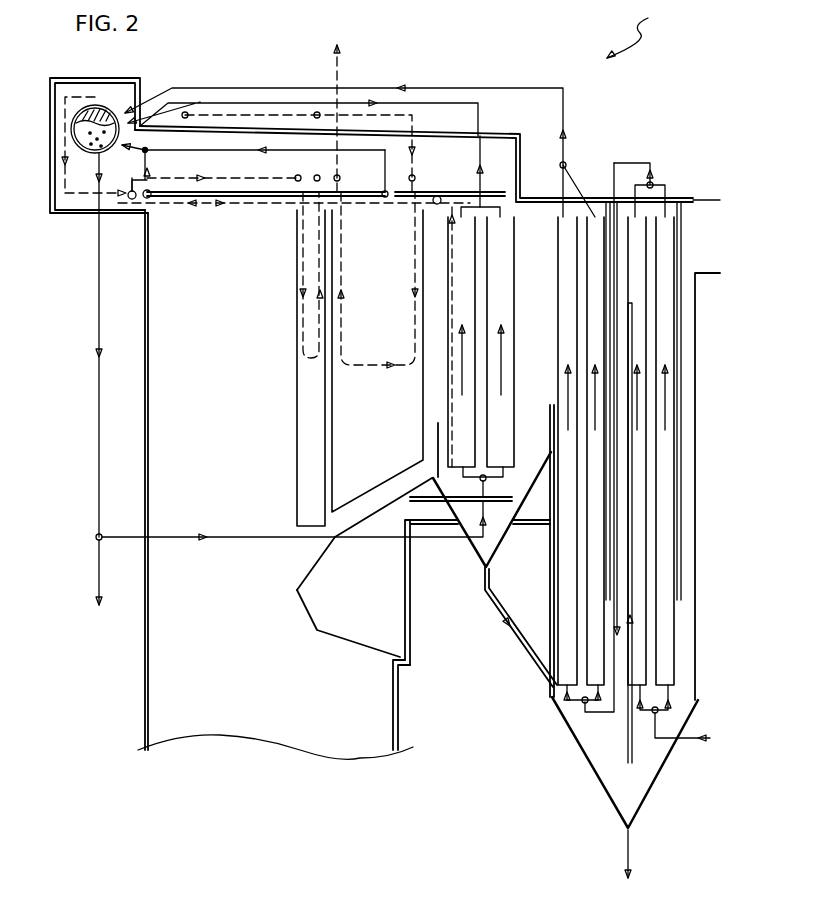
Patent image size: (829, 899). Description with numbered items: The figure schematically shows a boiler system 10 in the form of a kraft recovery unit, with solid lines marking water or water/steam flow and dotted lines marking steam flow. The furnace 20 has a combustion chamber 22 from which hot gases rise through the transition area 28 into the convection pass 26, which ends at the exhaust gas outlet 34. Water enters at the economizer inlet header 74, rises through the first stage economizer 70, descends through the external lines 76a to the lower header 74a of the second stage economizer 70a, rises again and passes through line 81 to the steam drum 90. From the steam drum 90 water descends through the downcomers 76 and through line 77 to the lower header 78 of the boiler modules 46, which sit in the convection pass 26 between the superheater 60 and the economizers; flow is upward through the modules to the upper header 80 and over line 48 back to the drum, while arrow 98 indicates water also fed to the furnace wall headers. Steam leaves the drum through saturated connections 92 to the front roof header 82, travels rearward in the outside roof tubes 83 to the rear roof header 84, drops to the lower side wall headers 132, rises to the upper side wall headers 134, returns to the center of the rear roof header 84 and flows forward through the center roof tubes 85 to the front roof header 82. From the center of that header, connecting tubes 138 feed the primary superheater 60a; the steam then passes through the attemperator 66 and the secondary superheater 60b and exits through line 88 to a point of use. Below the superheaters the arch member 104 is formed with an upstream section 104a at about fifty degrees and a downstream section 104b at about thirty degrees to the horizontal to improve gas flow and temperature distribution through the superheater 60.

The one drum boiler system 10 is at (644, 34).
The furnace 20 is at (249, 484).
The combustion chamber 22 is at (348, 728).
The convection pass 26 is at (547, 388).
The transition area 28 is at (243, 298).
The exhaust gas outlet 34 is at (710, 213).
The boiler modules 46 is at (510, 303).
The line 48 is at (442, 100).
The superheater 60 is at (322, 359).
The primary superheater 60a is at (298, 440).
The secondary superheater 60b is at (345, 460).
The attemperator 66 is at (265, 110).
The first stage economizer 70 is at (673, 393).
The second stage economizer 70a is at (600, 312).
The economizer inlet header 74 is at (655, 713).
The lower header of the second stage economizer 74a is at (582, 703).
The downcomers 76 is at (99, 376).
The external lines 76a is at (623, 527).
The line 77 is at (258, 537).
The lower header 78 is at (483, 478).
The upper header 80 is at (483, 205).
The line 81 is at (533, 87).
The front roof header 82 is at (132, 199).
The roof tubes 83 is at (245, 203).
The roof tubes 85 is at (294, 224).
The rear roof header 84 is at (438, 197).
The line 88 is at (340, 64).
The steam drum 90 is at (72, 132).
The saturated connections 92 is at (65, 178).
The arrow 98 is at (99, 574).
The arch member 104 is at (335, 538).
The upstream section 104a is at (315, 595).
The downstream section 104b is at (345, 567).
The lower side wall headers 132 is at (470, 482).
The upper side wall headers 134 is at (463, 193).
The connecting tubes 138 is at (263, 178).